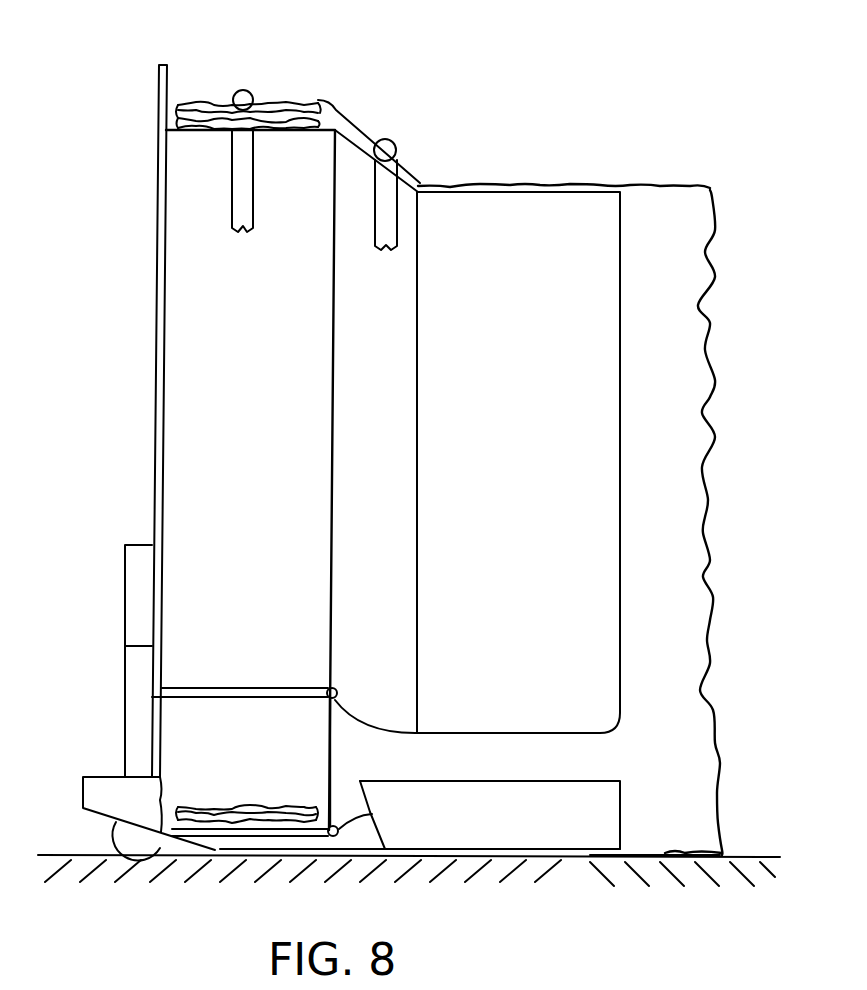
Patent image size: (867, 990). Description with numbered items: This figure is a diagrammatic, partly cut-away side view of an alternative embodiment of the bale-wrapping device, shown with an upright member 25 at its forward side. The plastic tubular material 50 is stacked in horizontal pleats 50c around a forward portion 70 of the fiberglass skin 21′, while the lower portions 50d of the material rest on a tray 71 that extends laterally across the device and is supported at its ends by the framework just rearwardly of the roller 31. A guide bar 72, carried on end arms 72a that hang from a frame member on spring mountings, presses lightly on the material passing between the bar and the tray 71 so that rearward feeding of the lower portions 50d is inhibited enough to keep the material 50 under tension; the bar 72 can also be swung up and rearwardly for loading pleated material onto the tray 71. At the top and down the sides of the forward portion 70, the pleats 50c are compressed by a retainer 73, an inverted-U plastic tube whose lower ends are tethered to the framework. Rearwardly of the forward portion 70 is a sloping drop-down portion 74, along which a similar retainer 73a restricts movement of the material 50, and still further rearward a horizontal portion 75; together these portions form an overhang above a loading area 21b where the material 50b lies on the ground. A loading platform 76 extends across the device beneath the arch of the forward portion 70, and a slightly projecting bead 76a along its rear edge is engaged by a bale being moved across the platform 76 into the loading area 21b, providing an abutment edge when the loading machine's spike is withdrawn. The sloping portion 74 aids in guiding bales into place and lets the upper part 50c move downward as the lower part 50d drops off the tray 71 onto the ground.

The vertical post 25 is at (158, 72).
The forward portion 70 is at (190, 168).
The retainer 73 is at (243, 89).
The horizontal pleats 50c is at (305, 98).
The sloping drop-down portion 74 is at (350, 150).
The retainer 73a is at (393, 143).
The plastic tubular material 50 is at (663, 190).
The horizontal portion 75 is at (505, 195).
The fiberglass skin 21′ is at (275, 403).
The roller 31 is at (137, 838).
The loading platform 76 is at (215, 688).
The projecting bead 76a is at (332, 688).
The end arms 72a is at (335, 745).
The guide bar 72 is at (370, 812).
The tray 71 is at (232, 836).
The lower portions 50d is at (233, 805).
The material on the ground 50b is at (588, 862).
The loading area 21b is at (570, 893).